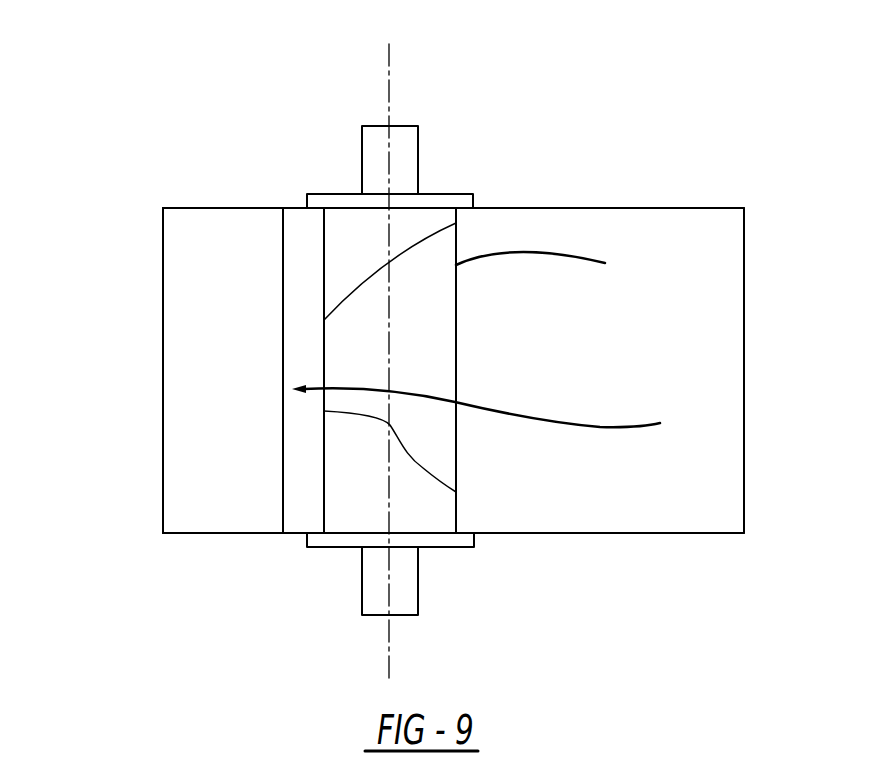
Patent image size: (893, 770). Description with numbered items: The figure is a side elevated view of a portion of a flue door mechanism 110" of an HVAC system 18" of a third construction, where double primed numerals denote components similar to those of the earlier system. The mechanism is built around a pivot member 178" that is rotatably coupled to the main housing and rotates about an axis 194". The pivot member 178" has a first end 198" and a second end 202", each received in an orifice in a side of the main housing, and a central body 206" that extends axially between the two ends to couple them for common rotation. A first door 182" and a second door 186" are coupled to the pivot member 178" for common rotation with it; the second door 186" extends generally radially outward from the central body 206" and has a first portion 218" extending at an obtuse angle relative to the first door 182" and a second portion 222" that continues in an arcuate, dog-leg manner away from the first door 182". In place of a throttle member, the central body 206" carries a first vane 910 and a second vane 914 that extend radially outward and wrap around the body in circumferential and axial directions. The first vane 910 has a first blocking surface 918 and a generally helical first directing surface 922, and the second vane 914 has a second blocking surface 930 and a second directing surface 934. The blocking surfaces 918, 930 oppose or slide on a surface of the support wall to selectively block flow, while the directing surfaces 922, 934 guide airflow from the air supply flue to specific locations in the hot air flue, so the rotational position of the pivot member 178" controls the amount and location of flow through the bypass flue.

The HVAC system 18 is at (126, 330).
The flue door mechanism 110 is at (158, 411).
The pivot member 178 is at (476, 553).
The first door 182 is at (673, 230).
The second door 186 is at (200, 260).
The axis 194 is at (389, 65).
The first end 198 is at (405, 135).
The second end 202 is at (407, 602).
The central body 206 is at (435, 355).
The first portion 218 is at (293, 520).
The second portion 222 is at (197, 518).
The first vane 910 is at (452, 249).
The second vane 914 is at (455, 490).
The first blocking surface 918 is at (366, 229).
The first directing surface 922 is at (257, 343).
The second blocking surface 930 is at (368, 495).
The second directing surface 934 is at (423, 468).